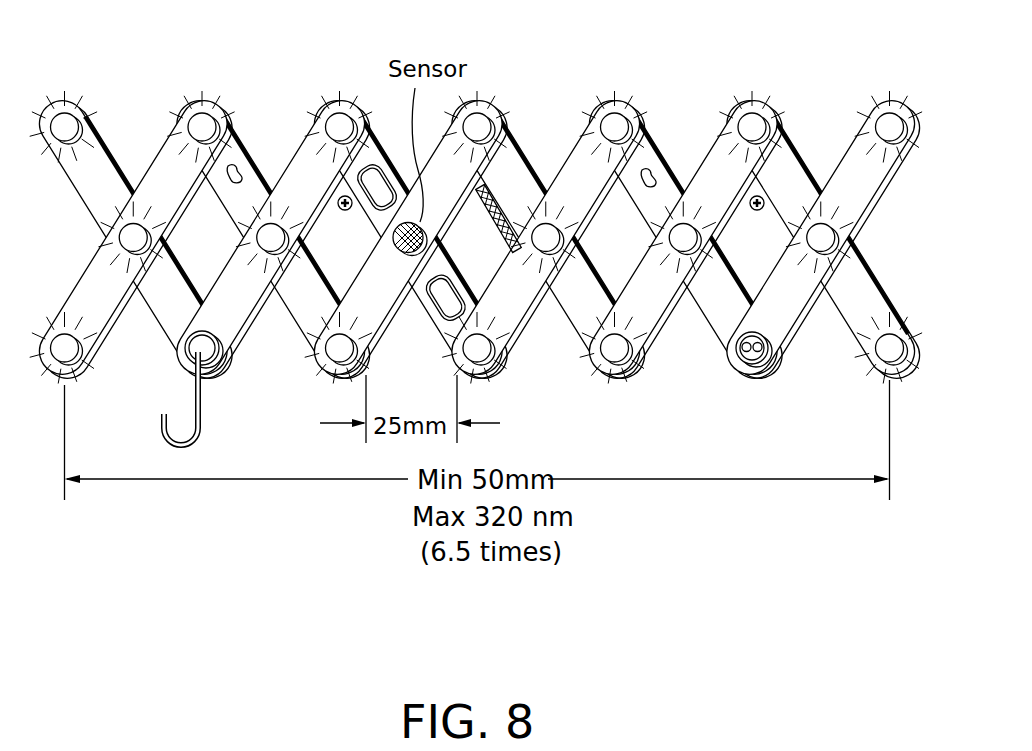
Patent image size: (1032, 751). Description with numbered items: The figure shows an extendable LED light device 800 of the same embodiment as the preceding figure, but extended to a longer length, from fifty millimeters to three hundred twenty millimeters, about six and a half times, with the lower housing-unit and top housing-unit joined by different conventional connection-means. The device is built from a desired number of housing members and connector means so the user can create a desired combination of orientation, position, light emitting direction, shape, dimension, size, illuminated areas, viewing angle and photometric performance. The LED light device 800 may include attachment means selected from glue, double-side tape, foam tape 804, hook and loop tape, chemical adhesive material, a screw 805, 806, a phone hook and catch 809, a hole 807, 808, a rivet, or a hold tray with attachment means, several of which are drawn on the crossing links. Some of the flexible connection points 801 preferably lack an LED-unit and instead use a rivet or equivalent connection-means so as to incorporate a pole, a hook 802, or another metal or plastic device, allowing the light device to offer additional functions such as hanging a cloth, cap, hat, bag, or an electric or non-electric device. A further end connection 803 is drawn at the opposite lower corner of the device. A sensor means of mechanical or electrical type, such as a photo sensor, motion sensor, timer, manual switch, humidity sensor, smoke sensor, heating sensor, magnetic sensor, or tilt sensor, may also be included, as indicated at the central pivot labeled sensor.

The LED light device 800 is at (292, 168).
The flexible connection point 801 is at (222, 345).
The hook 802 is at (210, 424).
The end pivot 803 is at (760, 354).
The foam tape 804 is at (518, 252).
The screw 805 is at (345, 211).
The screw 806 is at (757, 211).
The hole 807 is at (360, 172).
The hole 808 is at (440, 310).
The phone hook and catch 809 is at (226, 175).